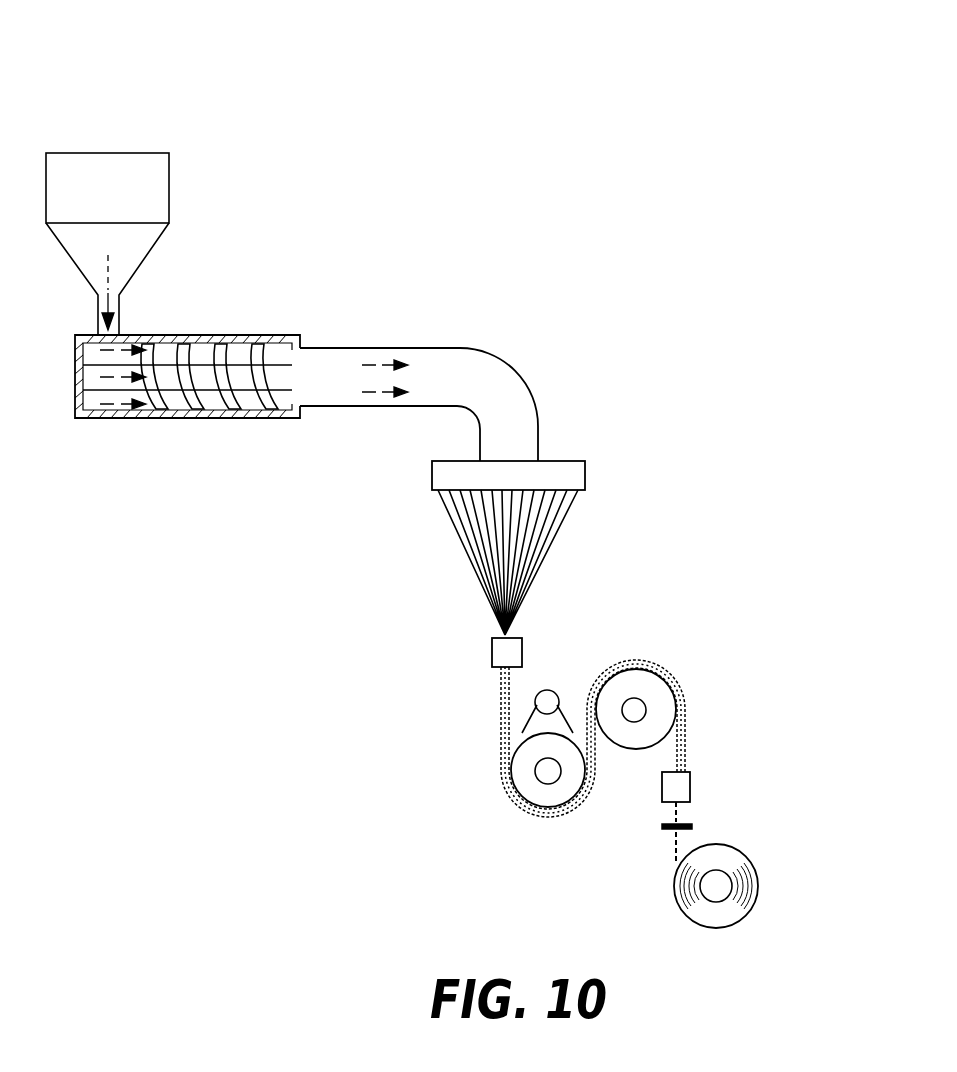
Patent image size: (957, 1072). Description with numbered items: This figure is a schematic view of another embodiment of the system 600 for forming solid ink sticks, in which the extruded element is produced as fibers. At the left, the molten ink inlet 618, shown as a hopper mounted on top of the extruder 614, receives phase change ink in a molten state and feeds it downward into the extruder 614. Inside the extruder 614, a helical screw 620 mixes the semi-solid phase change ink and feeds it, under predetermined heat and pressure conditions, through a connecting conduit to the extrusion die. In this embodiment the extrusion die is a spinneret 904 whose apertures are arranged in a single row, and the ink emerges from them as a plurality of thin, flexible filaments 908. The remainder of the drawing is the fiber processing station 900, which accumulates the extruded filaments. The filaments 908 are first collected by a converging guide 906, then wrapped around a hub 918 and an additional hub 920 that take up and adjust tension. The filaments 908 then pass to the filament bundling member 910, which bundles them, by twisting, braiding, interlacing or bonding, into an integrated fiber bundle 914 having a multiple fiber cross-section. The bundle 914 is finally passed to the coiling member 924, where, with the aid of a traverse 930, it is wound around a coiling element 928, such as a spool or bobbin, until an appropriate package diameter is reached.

The extruder system 600 is at (330, 80).
The molten ink inlet 618 is at (173, 188).
The screw 620 is at (217, 357).
The extruder 614 is at (230, 338).
The fiber processing station 900 is at (900, 338).
The spinneret 904 is at (563, 463).
The filaments 908 is at (472, 527).
The converging guide 906 is at (492, 652).
The hub 918 is at (527, 780).
The hub 920 is at (645, 688).
The filament bundling member 910 is at (687, 775).
The fiber bundle 914 is at (670, 807).
The traverse 930 is at (667, 830).
The coiling member 924 is at (748, 826).
The coiling element 928 is at (727, 910).